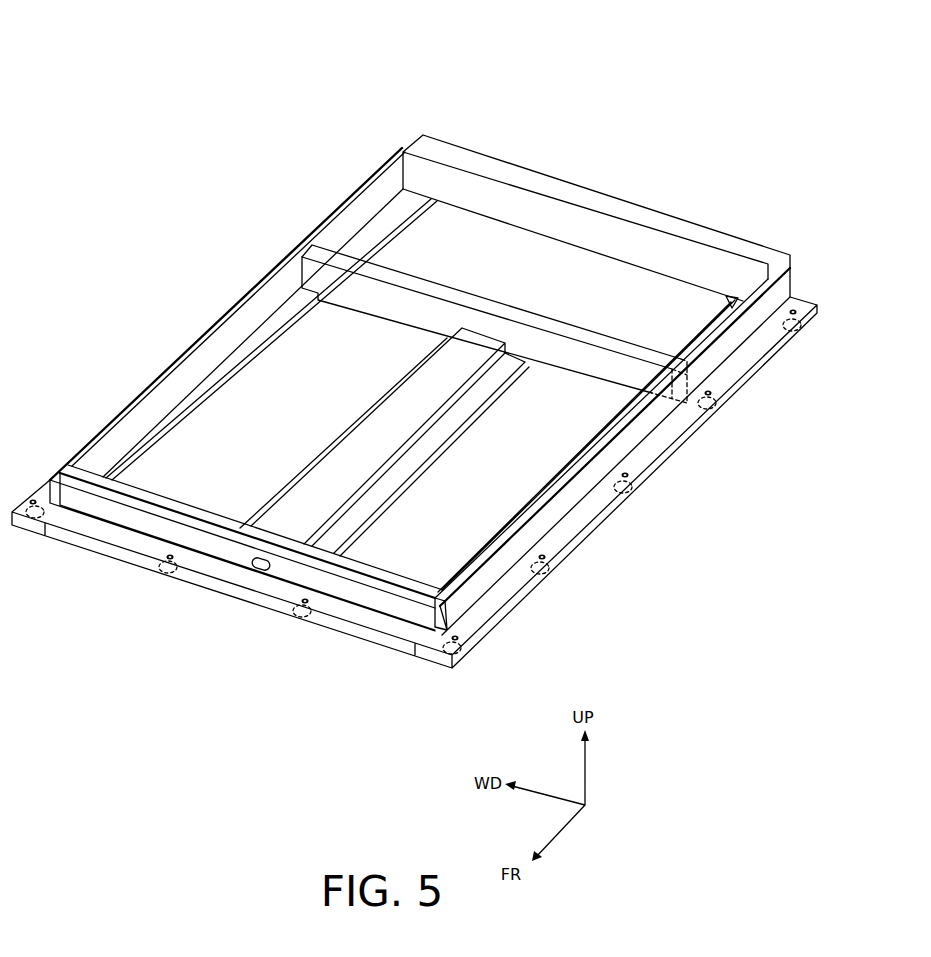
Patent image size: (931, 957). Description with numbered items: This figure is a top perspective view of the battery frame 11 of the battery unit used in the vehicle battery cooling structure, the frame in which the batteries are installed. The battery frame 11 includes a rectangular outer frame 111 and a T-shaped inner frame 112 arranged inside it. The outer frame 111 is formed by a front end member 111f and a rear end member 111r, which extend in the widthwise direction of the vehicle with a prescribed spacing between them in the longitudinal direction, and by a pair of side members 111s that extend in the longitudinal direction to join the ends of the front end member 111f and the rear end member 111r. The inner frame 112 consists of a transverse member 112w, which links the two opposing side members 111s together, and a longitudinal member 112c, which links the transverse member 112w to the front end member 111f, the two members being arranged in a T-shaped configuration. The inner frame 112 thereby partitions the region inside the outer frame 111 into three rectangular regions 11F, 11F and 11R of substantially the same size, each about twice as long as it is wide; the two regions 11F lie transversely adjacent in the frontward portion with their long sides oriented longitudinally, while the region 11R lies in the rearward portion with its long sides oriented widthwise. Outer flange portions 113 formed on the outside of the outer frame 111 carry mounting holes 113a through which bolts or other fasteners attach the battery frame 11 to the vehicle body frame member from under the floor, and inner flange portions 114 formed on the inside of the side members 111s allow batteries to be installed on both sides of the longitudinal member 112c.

The battery frame 11 is at (575, 85).
The outer frame 111 is at (672, 210).
The rear end member 111r is at (510, 170).
The side members 111s is at (243, 306).
The front end member 111f is at (365, 630).
The inner frame 112 is at (388, 262).
The transverse member 112w is at (610, 338).
The longitudinal member 112c is at (378, 440).
The outer flange portions 113 is at (135, 540).
The mounting holes 113a is at (300, 600).
The inner flange portions 114 is at (472, 400).
The rearward partitioned rectangular region 11R is at (531, 285).
The frontward partitioned rectangular regions 11F is at (299, 418).